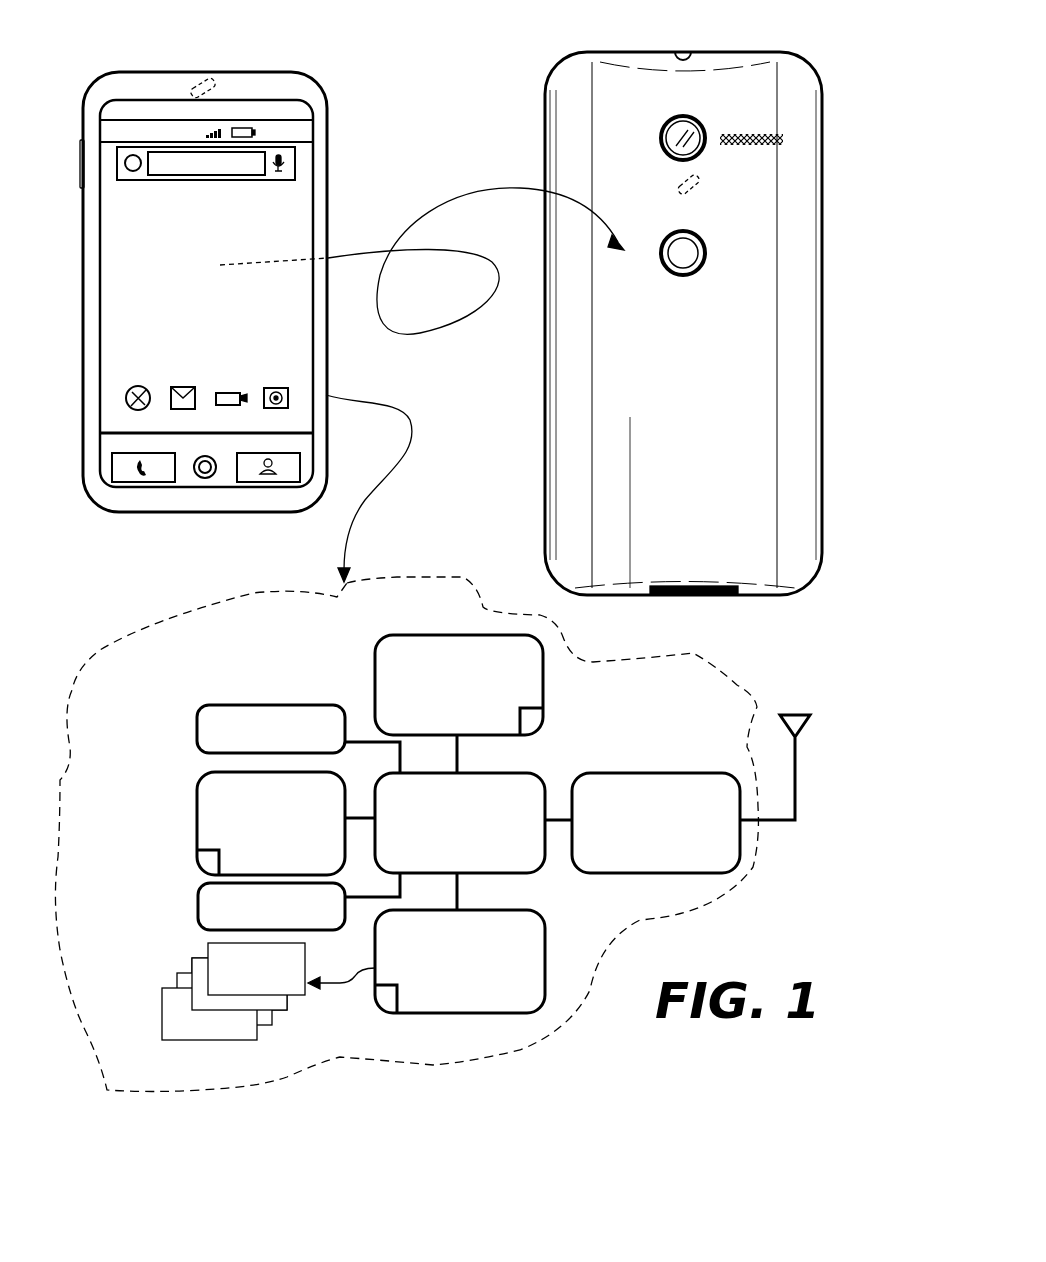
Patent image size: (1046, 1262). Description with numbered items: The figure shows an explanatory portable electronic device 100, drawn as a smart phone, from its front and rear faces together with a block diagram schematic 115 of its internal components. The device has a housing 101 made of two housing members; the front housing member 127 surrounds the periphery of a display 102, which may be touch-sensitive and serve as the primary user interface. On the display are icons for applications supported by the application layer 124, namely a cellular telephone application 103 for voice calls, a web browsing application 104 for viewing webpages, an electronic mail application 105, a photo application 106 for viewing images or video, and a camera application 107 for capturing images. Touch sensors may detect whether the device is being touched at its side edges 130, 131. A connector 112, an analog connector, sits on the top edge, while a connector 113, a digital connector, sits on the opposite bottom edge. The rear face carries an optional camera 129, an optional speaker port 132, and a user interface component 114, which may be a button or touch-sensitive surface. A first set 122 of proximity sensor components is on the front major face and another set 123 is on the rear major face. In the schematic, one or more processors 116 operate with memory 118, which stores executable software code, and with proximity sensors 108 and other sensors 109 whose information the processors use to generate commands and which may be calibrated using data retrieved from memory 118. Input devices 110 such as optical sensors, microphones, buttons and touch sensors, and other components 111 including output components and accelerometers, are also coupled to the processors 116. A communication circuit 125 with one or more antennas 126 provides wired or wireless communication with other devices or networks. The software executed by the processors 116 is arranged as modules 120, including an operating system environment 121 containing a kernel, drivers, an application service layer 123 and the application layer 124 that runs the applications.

The electronic device 100 is at (348, 152).
The housing 101 is at (284, 72).
The display 102 is at (142, 298).
The cellular telephone application 103 is at (135, 482).
The web browsing application 104 is at (138, 386).
The electronic mail application 105 is at (183, 386).
The photo application 106 is at (227, 392).
The camera application 107 is at (275, 387).
The proximity sensors 108 is at (240, 705).
The other sensors 109 is at (197, 903).
The input devices 110 is at (375, 672).
The other components 111 is at (197, 800).
The connector 112 is at (683, 50).
The connector 113 is at (695, 597).
The user interface component 114 is at (700, 262).
The block diagram schematic 115 is at (740, 688).
The processors 116 is at (545, 780).
The memory 118 is at (575, 927).
The modules 120 is at (152, 966).
The operating system environment 121 is at (293, 995).
The first set of proximity sensor components 122 is at (208, 82).
The second set of proximity sensor components 123 is at (695, 177).
The application layer 124 is at (197, 1040).
The communication circuit 125 is at (645, 772).
The antennas 126 is at (794, 712).
The front housing member 127 is at (422, 254).
The camera 129 is at (665, 128).
The side edge 130 is at (85, 382).
The side edge 131 is at (326, 315).
The speaker port 132 is at (726, 132).